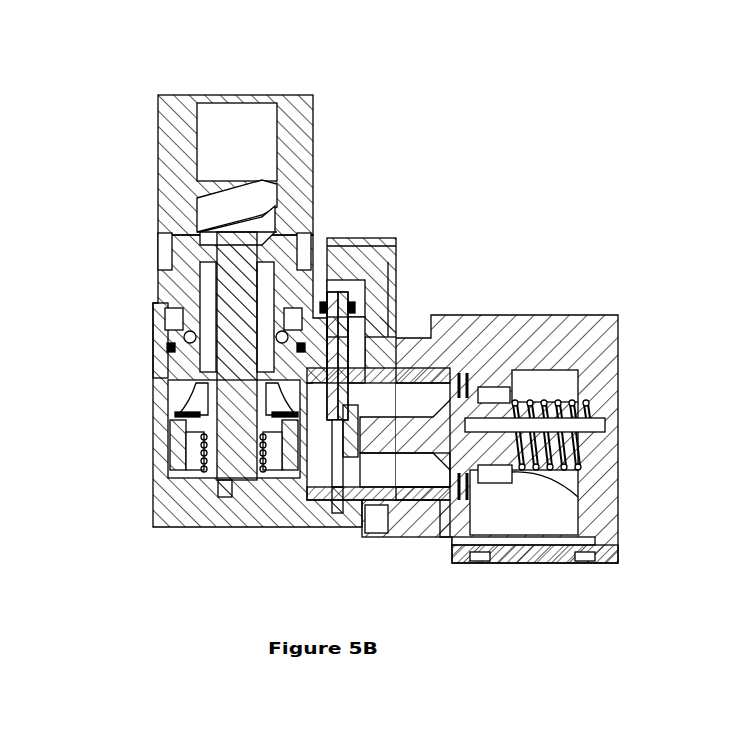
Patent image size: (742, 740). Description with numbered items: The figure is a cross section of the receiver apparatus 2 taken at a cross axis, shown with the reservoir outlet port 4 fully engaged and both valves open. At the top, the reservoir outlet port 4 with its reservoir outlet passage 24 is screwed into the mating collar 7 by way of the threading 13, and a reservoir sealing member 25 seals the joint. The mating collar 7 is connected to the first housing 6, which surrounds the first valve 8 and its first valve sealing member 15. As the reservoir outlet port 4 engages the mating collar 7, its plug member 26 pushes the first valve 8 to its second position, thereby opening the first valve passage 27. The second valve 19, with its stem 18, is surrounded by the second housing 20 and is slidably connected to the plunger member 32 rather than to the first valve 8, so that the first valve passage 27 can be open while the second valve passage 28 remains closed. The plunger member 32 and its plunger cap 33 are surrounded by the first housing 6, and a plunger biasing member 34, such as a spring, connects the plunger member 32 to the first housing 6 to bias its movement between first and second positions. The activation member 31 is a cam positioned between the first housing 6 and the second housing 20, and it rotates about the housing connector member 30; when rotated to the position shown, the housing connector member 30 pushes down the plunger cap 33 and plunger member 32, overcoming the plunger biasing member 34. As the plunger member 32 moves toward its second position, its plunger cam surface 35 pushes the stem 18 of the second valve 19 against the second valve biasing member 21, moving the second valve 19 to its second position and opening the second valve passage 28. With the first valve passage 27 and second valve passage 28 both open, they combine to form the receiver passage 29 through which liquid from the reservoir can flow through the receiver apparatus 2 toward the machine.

The receiver apparatus 2 is at (130, 540).
The reservoir outlet port 4 is at (160, 107).
The first housing 6 is at (178, 528).
The mating collar 7 is at (162, 306).
The first valve 8 is at (182, 366).
The threading 13 is at (162, 266).
The first valve sealing member 15 is at (197, 440).
The stem 18 is at (372, 445).
The second valve 19 is at (432, 440).
The second housing 20 is at (618, 527).
The second valve biasing member 21 is at (590, 458).
The reservoir outlet passage 24 is at (256, 140).
The reservoir sealing member 25 is at (172, 336).
The plug member 26 is at (208, 236).
The first valve passage 27 is at (200, 400).
The second valve passage 28 is at (458, 498).
The receiver passage 29 is at (352, 478).
The housing connector member 30 is at (363, 477).
The activation member 31 is at (396, 282).
The plunger member 32 is at (346, 298).
The plunger cap 33 is at (338, 300).
The plunger biasing member 34 is at (358, 311).
The plunger cam surface 35 is at (352, 447).